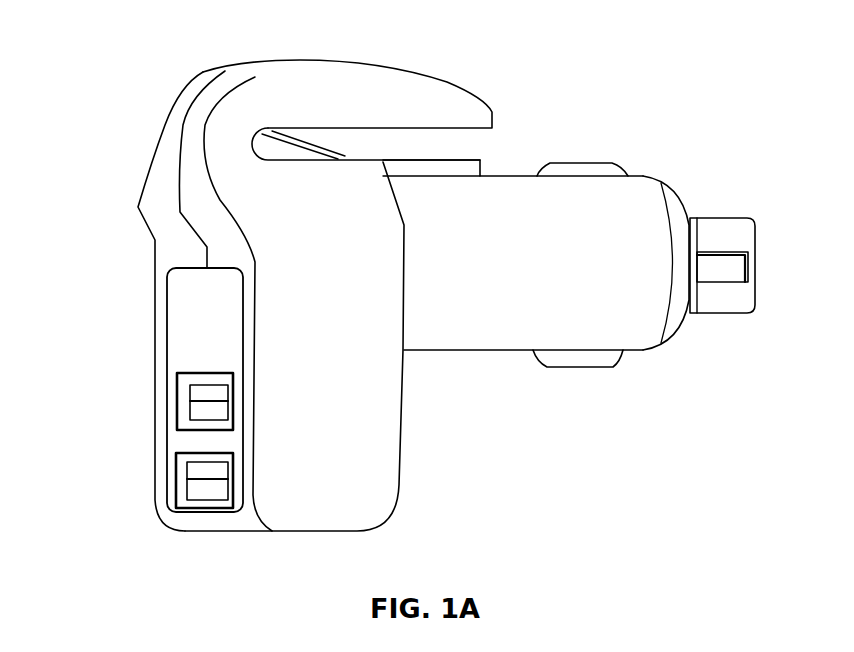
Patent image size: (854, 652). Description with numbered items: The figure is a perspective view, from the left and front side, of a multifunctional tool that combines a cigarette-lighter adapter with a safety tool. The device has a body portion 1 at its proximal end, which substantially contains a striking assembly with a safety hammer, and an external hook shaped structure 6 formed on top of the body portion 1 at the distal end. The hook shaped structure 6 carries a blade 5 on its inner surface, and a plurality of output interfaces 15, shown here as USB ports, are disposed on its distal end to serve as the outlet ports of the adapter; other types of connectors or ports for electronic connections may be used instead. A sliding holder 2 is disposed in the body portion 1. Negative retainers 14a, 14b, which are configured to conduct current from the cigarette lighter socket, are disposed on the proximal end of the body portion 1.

The body portion 1 is at (458, 338).
The sliding holder 2 is at (726, 232).
The blade 5 is at (288, 150).
The external hook shaped structure 6 is at (255, 80).
The negative retainer 14a is at (589, 170).
The negative retainer 14b is at (590, 368).
The output interfaces 15 is at (203, 513).